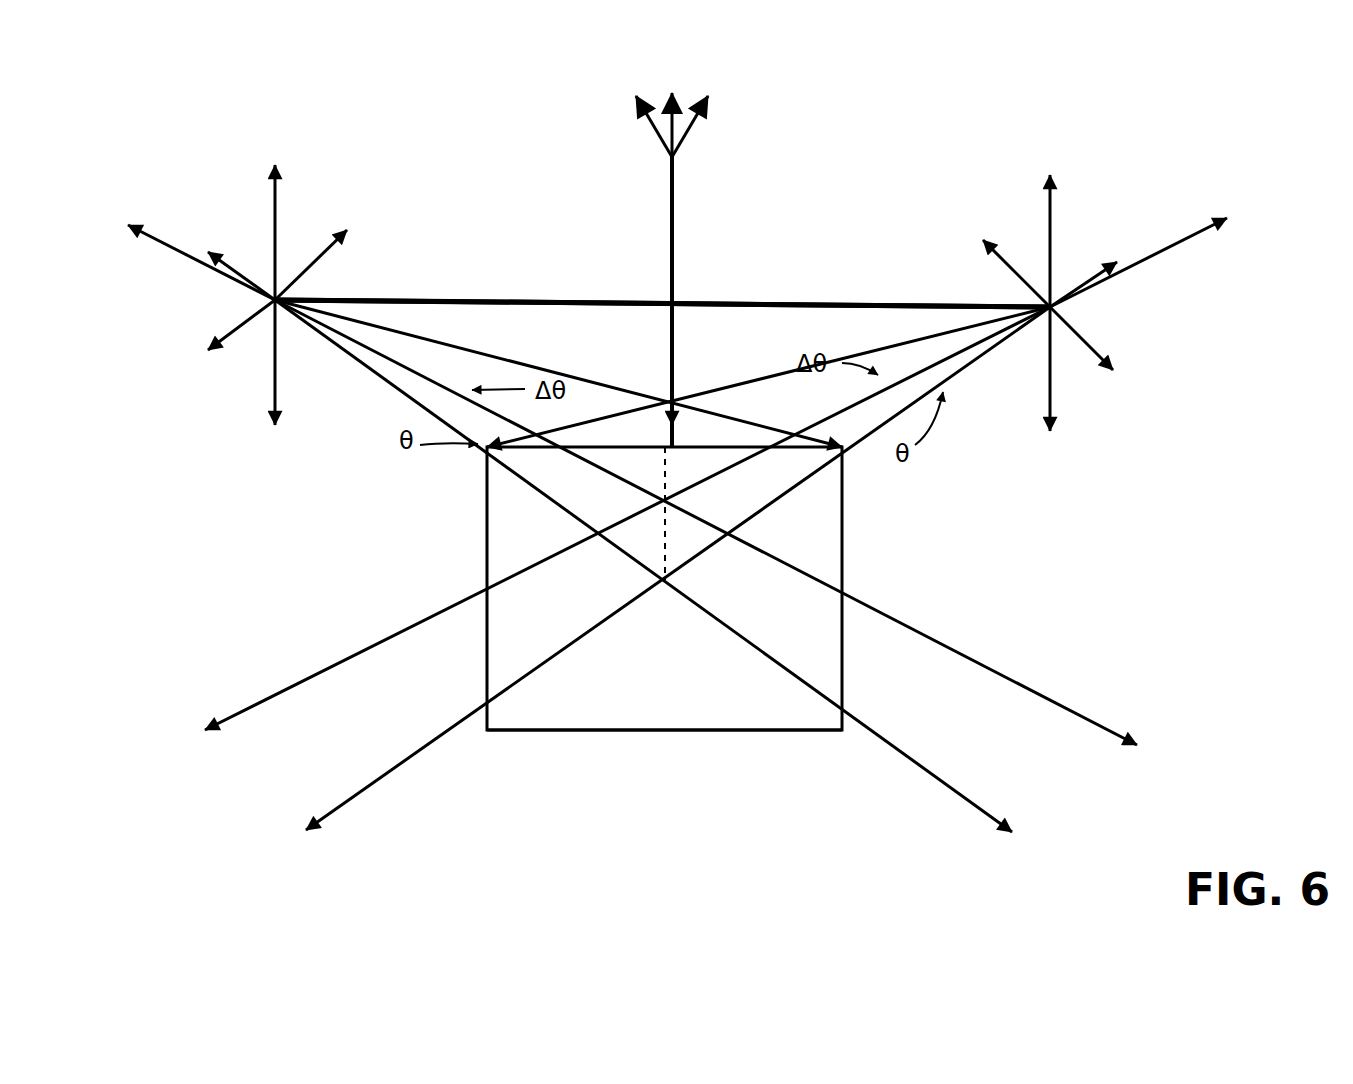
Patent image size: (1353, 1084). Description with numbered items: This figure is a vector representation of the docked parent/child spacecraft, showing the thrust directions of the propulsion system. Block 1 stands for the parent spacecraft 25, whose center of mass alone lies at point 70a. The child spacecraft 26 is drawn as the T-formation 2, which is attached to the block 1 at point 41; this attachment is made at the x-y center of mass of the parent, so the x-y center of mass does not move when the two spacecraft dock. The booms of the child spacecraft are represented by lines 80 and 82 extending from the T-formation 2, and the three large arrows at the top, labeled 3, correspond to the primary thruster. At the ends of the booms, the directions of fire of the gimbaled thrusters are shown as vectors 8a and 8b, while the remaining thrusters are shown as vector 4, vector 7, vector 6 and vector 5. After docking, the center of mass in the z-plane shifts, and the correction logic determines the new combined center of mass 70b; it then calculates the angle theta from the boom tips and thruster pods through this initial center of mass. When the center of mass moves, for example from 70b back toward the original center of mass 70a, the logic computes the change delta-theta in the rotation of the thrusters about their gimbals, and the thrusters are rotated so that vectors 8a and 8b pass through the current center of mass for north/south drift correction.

The block 1 is at (860, 547).
The T-formation 2 is at (656, 294).
The light source 3 is at (636, 77).
The vector 4 is at (213, 367).
The vector 5 is at (258, 432).
The vector 6 is at (1100, 168).
The vector 7 is at (972, 232).
The vector 8a is at (1060, 830).
The vector 8b is at (678, 481).
The parent spacecraft 25 is at (767, 735).
The child spacecraft 26 is at (690, 268).
The point 41 is at (682, 438).
The center of mass 70a is at (665, 590).
The center of mass 70b is at (677, 502).
The line 80 is at (518, 296).
The line 82 is at (780, 302).